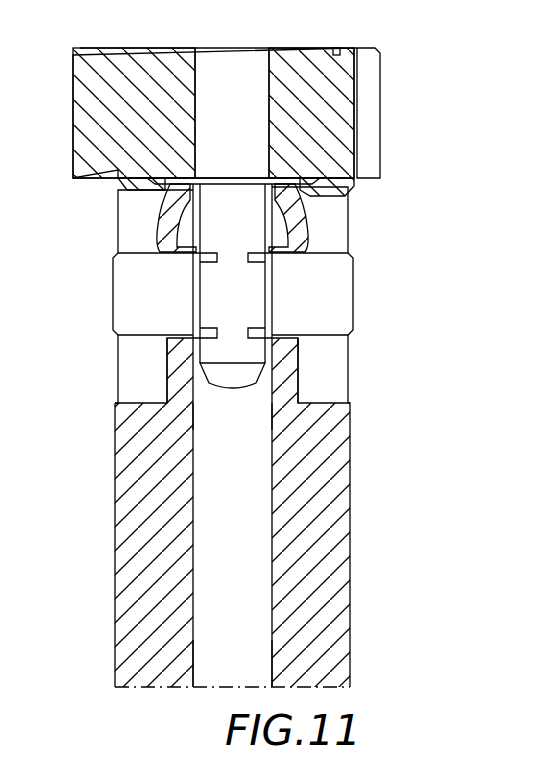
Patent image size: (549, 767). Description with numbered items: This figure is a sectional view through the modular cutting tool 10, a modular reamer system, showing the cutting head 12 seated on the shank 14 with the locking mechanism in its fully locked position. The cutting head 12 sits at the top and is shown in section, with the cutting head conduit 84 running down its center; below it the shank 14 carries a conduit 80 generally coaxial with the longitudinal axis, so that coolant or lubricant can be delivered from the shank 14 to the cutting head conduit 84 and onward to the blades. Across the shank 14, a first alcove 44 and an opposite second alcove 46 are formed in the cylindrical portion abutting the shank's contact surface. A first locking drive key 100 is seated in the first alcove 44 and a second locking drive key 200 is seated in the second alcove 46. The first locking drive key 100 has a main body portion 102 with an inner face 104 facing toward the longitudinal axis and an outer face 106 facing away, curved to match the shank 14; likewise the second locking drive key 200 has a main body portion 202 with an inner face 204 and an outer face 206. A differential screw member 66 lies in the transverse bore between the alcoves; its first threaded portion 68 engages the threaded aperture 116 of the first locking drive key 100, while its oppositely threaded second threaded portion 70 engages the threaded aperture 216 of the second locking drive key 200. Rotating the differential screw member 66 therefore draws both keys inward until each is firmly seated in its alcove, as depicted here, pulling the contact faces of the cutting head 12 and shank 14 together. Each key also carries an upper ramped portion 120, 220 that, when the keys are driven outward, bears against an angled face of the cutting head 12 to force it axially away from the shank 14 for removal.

The modular cutting tool 10 is at (468, 132).
The cutting head 12 is at (342, 110).
The shank 14 is at (120, 502).
The first alcove 44 is at (128, 401).
The second alcove 46 is at (322, 404).
The differential screw member 66 is at (205, 303).
The first threaded portion 68 is at (128, 290).
The second threaded portion 70 is at (338, 267).
The conduit 80 is at (213, 668).
The cutting head conduit 84 is at (248, 48).
The first locking drive key 100 is at (128, 360).
The main body portion 102 is at (125, 345).
The inner face 104 is at (180, 395).
The outer face 106 is at (110, 210).
The threaded aperture 116 is at (156, 268).
The upper ramped portion 120 is at (168, 182).
The second locking drive key 200 is at (335, 352).
The main body portion 202 is at (330, 372).
The inner face 204 is at (287, 394).
The outer face 206 is at (362, 212).
The threaded aperture 216 is at (336, 326).
The upper ramped portion 220 is at (286, 188).